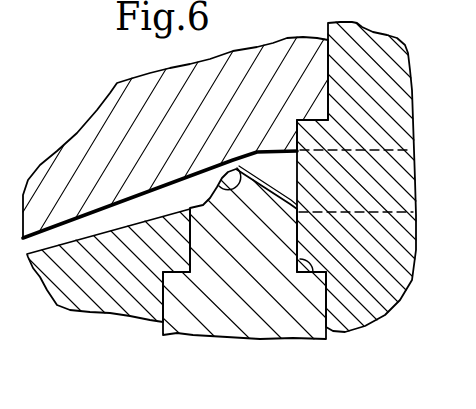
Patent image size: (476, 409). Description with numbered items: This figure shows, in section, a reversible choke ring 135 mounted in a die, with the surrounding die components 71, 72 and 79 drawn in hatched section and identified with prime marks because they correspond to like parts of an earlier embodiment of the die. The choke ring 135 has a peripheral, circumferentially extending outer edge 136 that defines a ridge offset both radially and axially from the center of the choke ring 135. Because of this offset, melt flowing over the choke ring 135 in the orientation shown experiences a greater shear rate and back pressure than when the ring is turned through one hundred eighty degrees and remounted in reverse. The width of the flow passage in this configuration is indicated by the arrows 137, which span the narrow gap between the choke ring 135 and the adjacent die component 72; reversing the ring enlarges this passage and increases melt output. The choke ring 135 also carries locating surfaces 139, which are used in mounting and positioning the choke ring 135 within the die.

The die component 71 is at (395, 87).
The die component 72 is at (77, 155).
The die component 79 is at (105, 298).
The choke ring 135 is at (256, 320).
The outer edge 136 is at (237, 165).
The arrows 137 is at (248, 212).
The locating surfaces 139 is at (306, 264).